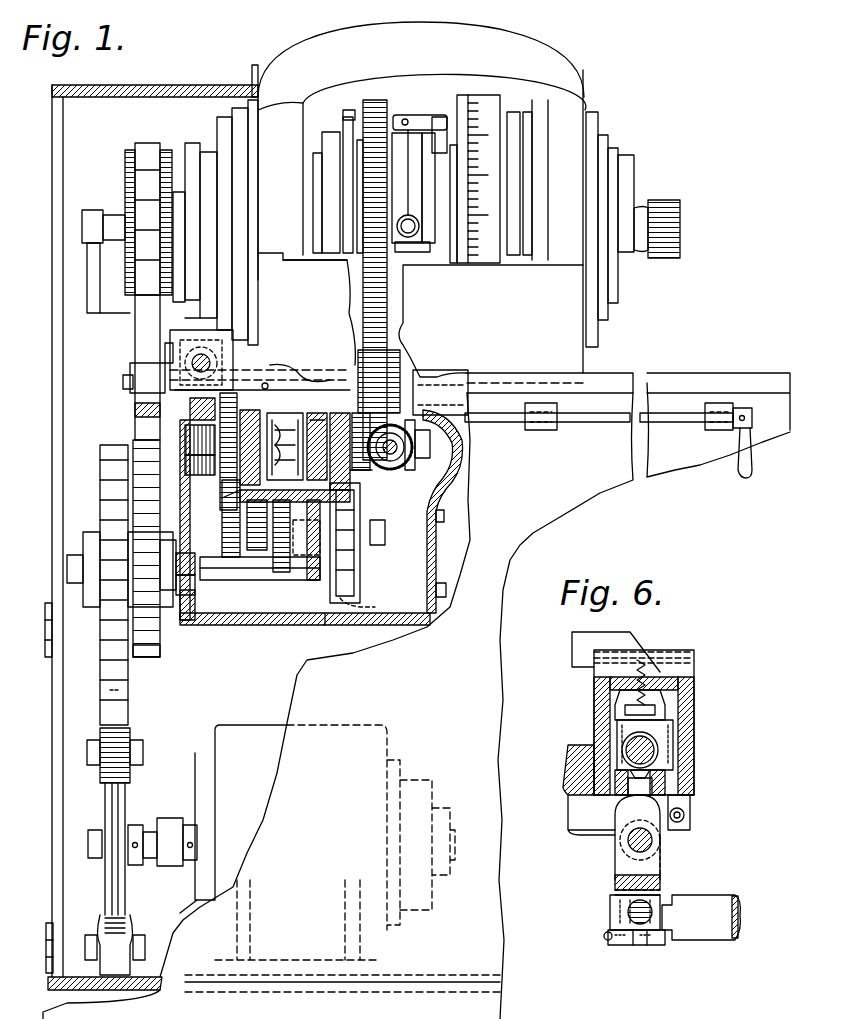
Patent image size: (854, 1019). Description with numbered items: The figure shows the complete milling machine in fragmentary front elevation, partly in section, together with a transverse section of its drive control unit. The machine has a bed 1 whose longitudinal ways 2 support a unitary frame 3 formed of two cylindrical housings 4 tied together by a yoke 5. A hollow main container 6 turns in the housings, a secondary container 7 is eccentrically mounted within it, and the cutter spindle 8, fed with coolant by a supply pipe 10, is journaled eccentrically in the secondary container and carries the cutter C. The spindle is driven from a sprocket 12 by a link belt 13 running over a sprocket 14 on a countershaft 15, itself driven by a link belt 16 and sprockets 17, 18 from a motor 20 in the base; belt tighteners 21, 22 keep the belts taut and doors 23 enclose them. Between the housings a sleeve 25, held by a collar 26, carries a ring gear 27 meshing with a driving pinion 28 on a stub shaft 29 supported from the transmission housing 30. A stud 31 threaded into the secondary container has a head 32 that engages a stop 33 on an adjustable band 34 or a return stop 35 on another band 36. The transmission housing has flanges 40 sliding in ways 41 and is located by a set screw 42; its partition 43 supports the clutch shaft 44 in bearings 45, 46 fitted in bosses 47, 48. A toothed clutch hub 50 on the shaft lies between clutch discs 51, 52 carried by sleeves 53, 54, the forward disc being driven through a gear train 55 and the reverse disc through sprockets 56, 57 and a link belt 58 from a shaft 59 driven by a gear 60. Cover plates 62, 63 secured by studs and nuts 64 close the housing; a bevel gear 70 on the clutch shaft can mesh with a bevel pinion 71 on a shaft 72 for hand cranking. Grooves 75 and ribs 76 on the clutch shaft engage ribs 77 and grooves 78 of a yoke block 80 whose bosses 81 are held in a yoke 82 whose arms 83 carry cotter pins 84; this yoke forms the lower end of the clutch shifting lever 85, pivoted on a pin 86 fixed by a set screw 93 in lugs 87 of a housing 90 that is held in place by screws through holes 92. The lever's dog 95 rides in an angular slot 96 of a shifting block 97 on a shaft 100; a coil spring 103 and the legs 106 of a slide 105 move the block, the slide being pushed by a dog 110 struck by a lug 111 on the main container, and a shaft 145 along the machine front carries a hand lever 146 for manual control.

In FIG. 1, the bed 1 is at (396, 706).
In FIG. 1, the longitudinal ways 2 is at (625, 393).
In FIG. 1, the unitary frame 3 is at (491, 321).
In FIG. 1, the housings 4 is at (409, 231).
In FIG. 1, the yoke 5 is at (422, 197).
In FIG. 1, the main container 6 is at (208, 152).
In FIG. 1, the secondary container 7 is at (636, 158).
In FIG. 1, the cutter spindle 8 is at (178, 192).
In FIG. 1, the supply pipe 10 is at (93, 313).
In FIG. 1, the sprocket 12 is at (125, 172).
In FIG. 1, the link belt 13 is at (130, 345).
In FIG. 1, the sprocket 14 is at (148, 657).
In FIG. 1, the countershaft 15 is at (182, 567).
In FIG. 1, the link belt 16 is at (105, 700).
In FIG. 1, the sprocket 17 is at (118, 700).
In FIG. 1, the sprocket 18 is at (100, 830).
In FIG. 1, the motor 20 is at (340, 858).
In FIG. 1, the belt tightener 21 is at (135, 410).
In FIG. 1, the belt tightener 22 is at (130, 722).
In FIG. 1, the doors 23 is at (52, 410).
In FIG. 1, the rotatable sleeve 25 is at (413, 188).
In FIG. 1, the collar 26 is at (332, 160).
In FIG. 1, the ring gear 27 is at (375, 271).
In FIG. 1, the driving pinion 28 is at (405, 340).
In FIG. 1, the stub shaft 29 is at (425, 378).
In FIG. 1, the transmission housing 30 is at (278, 625).
In FIG. 1, the stud 31 is at (403, 172).
In FIG. 1, the head 32 is at (404, 215).
In FIG. 1, the stop 33 is at (420, 115).
In FIG. 1, the band 34 is at (441, 117).
In FIG. 1, the return stop 35 is at (412, 252).
In FIG. 1, the band 36 is at (462, 263).
In FIG. 1, the flanges 40 is at (268, 380).
In FIG. 1, the ways 41 is at (265, 383).
In FIG. 1, the set screw 42 is at (300, 366).
In FIG. 1, the partition 43 is at (330, 620).
In FIG. 1, the clutch shaft 44 is at (240, 470).
In FIG. 6, the clutch shaft 44 is at (708, 940).
In FIG. 1, the bearing 45 is at (257, 441).
In FIG. 1, the bearing 46 is at (318, 413).
In FIG. 1, the boss 47 is at (245, 420).
In FIG. 1, the boss 48 is at (315, 413).
In FIG. 1, the clutch hub 50 is at (285, 438).
In FIG. 1, the clutch disc 51 is at (278, 436).
In FIG. 1, the clutch disc 52 is at (321, 449).
In FIG. 1, the sleeve 53 is at (240, 490).
In FIG. 1, the sleeve 54 is at (361, 467).
In FIG. 1, the gear train 55 is at (222, 535).
In FIG. 1, the sprocket 56 is at (355, 418).
In FIG. 1, the sprocket 57 is at (362, 606).
In FIG. 1, the link belt 58 is at (350, 572).
In FIG. 1, the shaft 59 is at (378, 530).
In FIG. 1, the gear 60 is at (285, 580).
In FIG. 1, the cover plate 62 is at (431, 540).
In FIG. 1, the cover plate 63 is at (183, 612).
In FIG. 1, the threaded studs and nuts 64 is at (444, 590).
In FIG. 1, the bevel gear 70 is at (422, 458).
In FIG. 1, the bevel pinion 71 is at (392, 462).
In FIG. 1, the shaft 72 is at (388, 462).
In FIG. 1, the grooves 75 is at (185, 445).
In FIG. 1, the ribs 76 is at (188, 465).
In FIG. 6, the ribs 76 is at (640, 945).
In FIG. 6, the ribs 77 is at (662, 875).
In FIG. 6, the grooves 78 is at (615, 890).
In FIG. 1, the yoke block 80 is at (190, 420).
In FIG. 6, the yoke block 80 is at (610, 912).
In FIG. 6, the bosses 81 is at (628, 912).
In FIG. 6, the yoke 82 is at (615, 880).
In FIG. 6, the arms 83 is at (620, 945).
In FIG. 6, the cotter pins 84 is at (604, 936).
In FIG. 6, the clutch shifting lever 85 is at (662, 862).
In FIG. 6, the pivot pin 86 is at (628, 845).
In FIG. 6, the lugs 87 is at (615, 840).
In FIG. 6, the housing 90 is at (690, 768).
In FIG. 6, the holes 92 is at (692, 815).
In FIG. 6, the set screw 93 is at (662, 842).
In FIG. 6, the dog 95 is at (640, 800).
In FIG. 6, the angular slot 96 is at (660, 785).
In FIG. 6, the shifting block 97 is at (610, 797).
In FIG. 1, the shaft 100 is at (210, 360).
In FIG. 6, the shaft 100 is at (658, 752).
In FIG. 6, the coil spring 103 is at (660, 755).
In FIG. 6, the slide 105 is at (694, 695).
In FIG. 6, the legs 106 is at (665, 800).
In FIG. 1, the dog 110 is at (175, 333).
In FIG. 6, the dog 110 is at (625, 635).
In FIG. 1, the lug 111 is at (185, 318).
In FIG. 1, the shaft 145 is at (583, 422).
In FIG. 1, the hand lever 146 is at (748, 478).
In FIG. 1, the cutter C is at (680, 226).